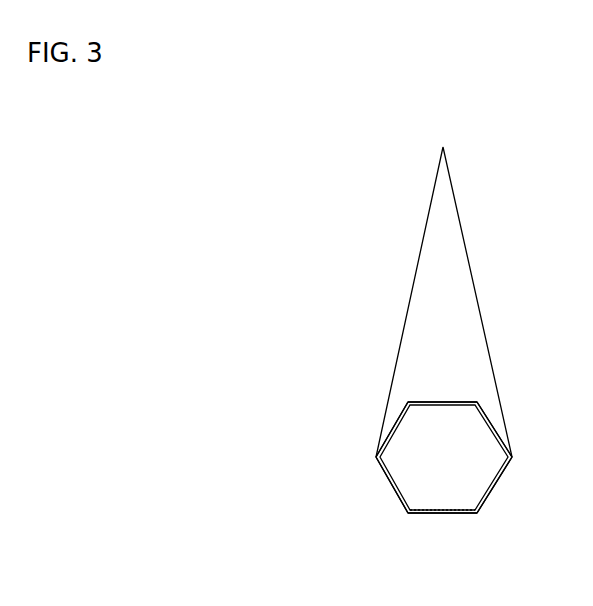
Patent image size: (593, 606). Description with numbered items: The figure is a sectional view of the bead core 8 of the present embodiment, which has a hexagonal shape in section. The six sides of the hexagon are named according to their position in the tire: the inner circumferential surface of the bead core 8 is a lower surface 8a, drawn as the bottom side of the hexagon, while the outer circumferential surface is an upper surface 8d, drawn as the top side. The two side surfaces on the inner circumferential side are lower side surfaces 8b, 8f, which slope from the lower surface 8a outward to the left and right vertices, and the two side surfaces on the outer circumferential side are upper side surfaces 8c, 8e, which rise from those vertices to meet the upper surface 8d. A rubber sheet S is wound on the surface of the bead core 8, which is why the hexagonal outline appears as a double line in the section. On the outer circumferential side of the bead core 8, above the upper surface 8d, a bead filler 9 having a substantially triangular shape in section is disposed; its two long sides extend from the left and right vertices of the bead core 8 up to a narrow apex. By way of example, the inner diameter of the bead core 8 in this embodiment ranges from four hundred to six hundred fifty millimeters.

The bead filler 9 is at (442, 287).
The bead core 8 is at (440, 465).
The rubber sheet S is at (427, 515).
The lower surface 8a is at (445, 515).
The lower side surface 8b is at (392, 488).
The upper side surface 8c is at (395, 428).
The upper surface 8d is at (464, 402).
The upper side surface 8e is at (495, 430).
The lower side surface 8f is at (490, 488).